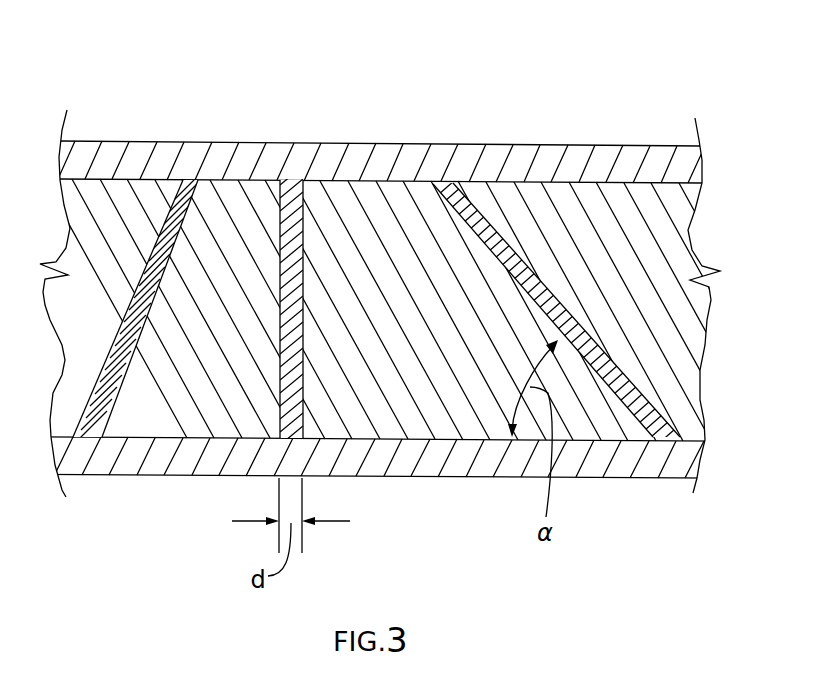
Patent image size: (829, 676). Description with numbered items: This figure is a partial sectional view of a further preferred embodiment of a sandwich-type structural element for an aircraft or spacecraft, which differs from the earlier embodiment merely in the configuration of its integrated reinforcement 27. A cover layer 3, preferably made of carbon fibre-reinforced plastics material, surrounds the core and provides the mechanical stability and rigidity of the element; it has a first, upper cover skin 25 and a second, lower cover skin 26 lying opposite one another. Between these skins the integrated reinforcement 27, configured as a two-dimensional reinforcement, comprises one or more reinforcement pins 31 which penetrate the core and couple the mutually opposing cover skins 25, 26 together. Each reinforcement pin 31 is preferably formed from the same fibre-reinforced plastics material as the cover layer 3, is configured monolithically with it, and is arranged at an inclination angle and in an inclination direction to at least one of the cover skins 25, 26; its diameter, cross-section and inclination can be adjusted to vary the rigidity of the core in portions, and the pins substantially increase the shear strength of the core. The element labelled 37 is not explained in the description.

The cover layer 3 is at (454, 136).
The first cover skin 25 is at (83, 150).
The second cover skin 26 is at (644, 474).
The integrated reinforcement 27 is at (562, 282).
The reinforcement pin 31 is at (293, 188).
The channel wall 37 is at (620, 377).